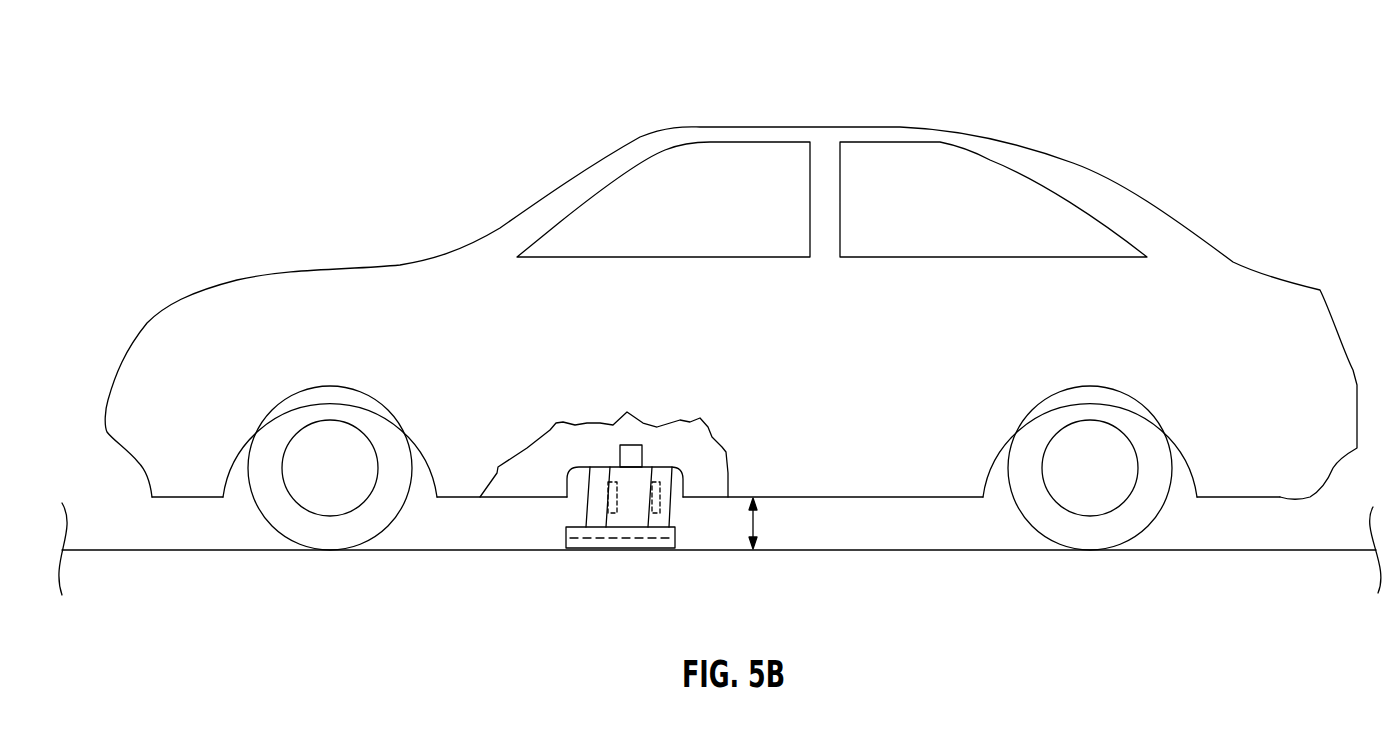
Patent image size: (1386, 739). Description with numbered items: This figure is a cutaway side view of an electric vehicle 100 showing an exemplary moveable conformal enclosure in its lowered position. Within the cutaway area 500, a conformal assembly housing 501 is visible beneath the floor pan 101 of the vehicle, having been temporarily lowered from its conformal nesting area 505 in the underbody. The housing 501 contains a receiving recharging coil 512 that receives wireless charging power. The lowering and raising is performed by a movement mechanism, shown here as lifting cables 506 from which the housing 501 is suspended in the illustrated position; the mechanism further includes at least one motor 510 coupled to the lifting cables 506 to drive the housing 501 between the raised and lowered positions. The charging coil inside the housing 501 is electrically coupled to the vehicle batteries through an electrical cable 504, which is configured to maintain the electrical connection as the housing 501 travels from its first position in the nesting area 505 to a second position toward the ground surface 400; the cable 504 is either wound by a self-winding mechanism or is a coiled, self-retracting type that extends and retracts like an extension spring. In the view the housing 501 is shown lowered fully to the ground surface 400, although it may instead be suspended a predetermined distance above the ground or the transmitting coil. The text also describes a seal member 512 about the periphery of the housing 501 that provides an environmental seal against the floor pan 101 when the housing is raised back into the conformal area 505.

The electric vehicle 100 is at (1162, 93).
The floor pan 101 is at (915, 497).
The ground surface 400 is at (223, 552).
The cutaway area 500 is at (732, 448).
The conformal assembly housing 501 is at (650, 533).
The electrical cable 504 is at (610, 503).
The conformal nesting area 505 is at (710, 462).
The lifting cables 506 is at (585, 467).
The motor 510 is at (635, 445).
The receiving recharging coil 512 is at (588, 545).